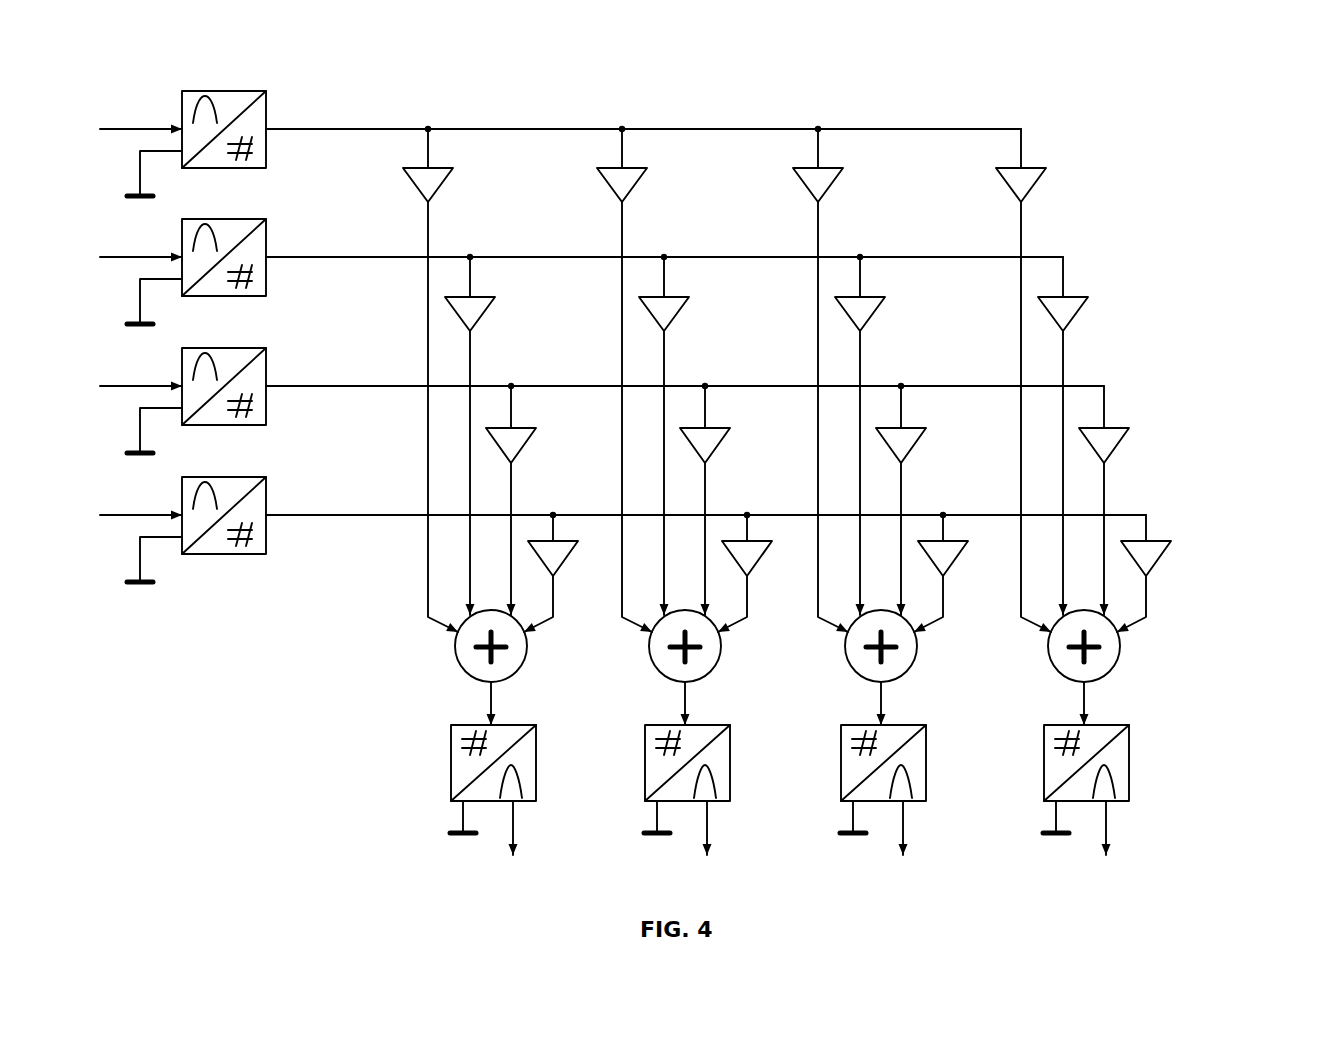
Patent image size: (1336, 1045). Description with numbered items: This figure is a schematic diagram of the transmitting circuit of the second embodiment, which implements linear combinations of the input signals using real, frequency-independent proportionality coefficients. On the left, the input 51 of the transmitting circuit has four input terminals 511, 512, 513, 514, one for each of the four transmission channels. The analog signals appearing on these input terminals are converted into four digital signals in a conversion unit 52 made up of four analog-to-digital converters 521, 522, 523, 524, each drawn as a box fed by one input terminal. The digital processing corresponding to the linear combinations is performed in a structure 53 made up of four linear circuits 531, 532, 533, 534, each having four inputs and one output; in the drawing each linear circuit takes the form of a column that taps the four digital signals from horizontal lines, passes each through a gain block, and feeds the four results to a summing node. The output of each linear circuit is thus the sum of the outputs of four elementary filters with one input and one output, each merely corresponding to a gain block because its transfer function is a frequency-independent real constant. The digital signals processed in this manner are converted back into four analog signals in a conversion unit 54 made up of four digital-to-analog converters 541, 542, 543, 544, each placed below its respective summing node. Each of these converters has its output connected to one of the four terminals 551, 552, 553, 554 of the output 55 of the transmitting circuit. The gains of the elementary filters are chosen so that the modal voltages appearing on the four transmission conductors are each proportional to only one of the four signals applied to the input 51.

The input 51 is at (102, 638).
The input terminal 511 is at (118, 118).
The input terminal 512 is at (106, 248).
The input terminal 513 is at (106, 378).
The input terminal 514 is at (107, 508).
The conversion unit 52 is at (232, 638).
The analog-to-digital converter 521 is at (277, 98).
The analog-to-digital converter 522 is at (277, 226).
The analog-to-digital converter 523 is at (277, 356).
The analog-to-digital converter 524 is at (277, 485).
The structure 53 is at (1230, 605).
The linear circuit 531 is at (465, 112).
The linear circuit 532 is at (664, 112).
The linear circuit 533 is at (854, 112).
The linear circuit 534 is at (1060, 112).
The conversion unit 54 is at (1206, 743).
The digital-to-analog converter 541 is at (443, 765).
The digital-to-analog converter 542 is at (637, 767).
The digital-to-analog converter 543 is at (836, 767).
The digital-to-analog converter 544 is at (1036, 767).
The output 55 is at (1248, 830).
The terminal 551 is at (523, 835).
The terminal 552 is at (718, 835).
The terminal 553 is at (917, 835).
The terminal 554 is at (1113, 835).